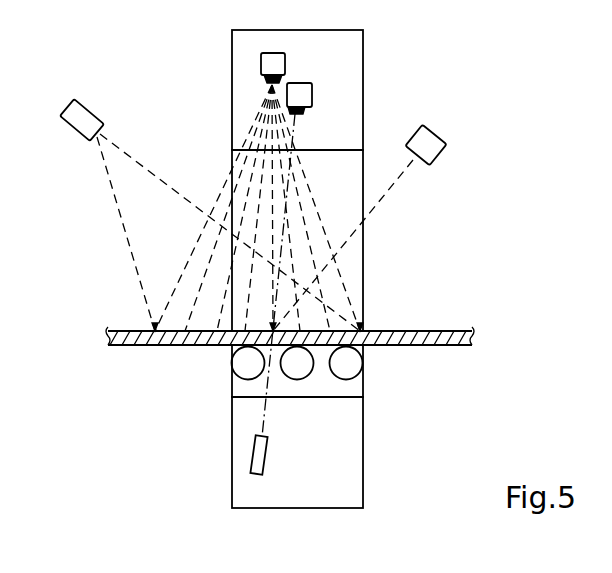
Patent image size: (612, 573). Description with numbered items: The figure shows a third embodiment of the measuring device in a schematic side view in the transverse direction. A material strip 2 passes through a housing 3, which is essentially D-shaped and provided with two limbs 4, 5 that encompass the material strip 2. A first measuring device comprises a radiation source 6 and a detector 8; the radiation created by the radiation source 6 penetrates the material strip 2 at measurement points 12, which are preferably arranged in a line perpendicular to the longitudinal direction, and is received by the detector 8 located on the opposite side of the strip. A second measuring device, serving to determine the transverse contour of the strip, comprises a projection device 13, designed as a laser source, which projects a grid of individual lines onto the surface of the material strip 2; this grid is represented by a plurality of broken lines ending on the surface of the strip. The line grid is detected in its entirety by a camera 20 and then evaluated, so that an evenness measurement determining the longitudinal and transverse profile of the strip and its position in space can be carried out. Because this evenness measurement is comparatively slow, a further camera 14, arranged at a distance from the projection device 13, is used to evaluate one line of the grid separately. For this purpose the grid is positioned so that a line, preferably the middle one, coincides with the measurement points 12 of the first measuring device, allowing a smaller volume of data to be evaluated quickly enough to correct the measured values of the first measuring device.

The material strip 2 is at (425, 332).
The housing 3 is at (345, 283).
The limb 4 is at (347, 70).
The limb 5 is at (348, 432).
The radiation source 6 is at (302, 98).
The detector 8 is at (257, 470).
The measurement points 12 is at (275, 331).
The projection device 13 is at (265, 62).
The camera 14 is at (435, 150).
The camera 20 is at (70, 122).